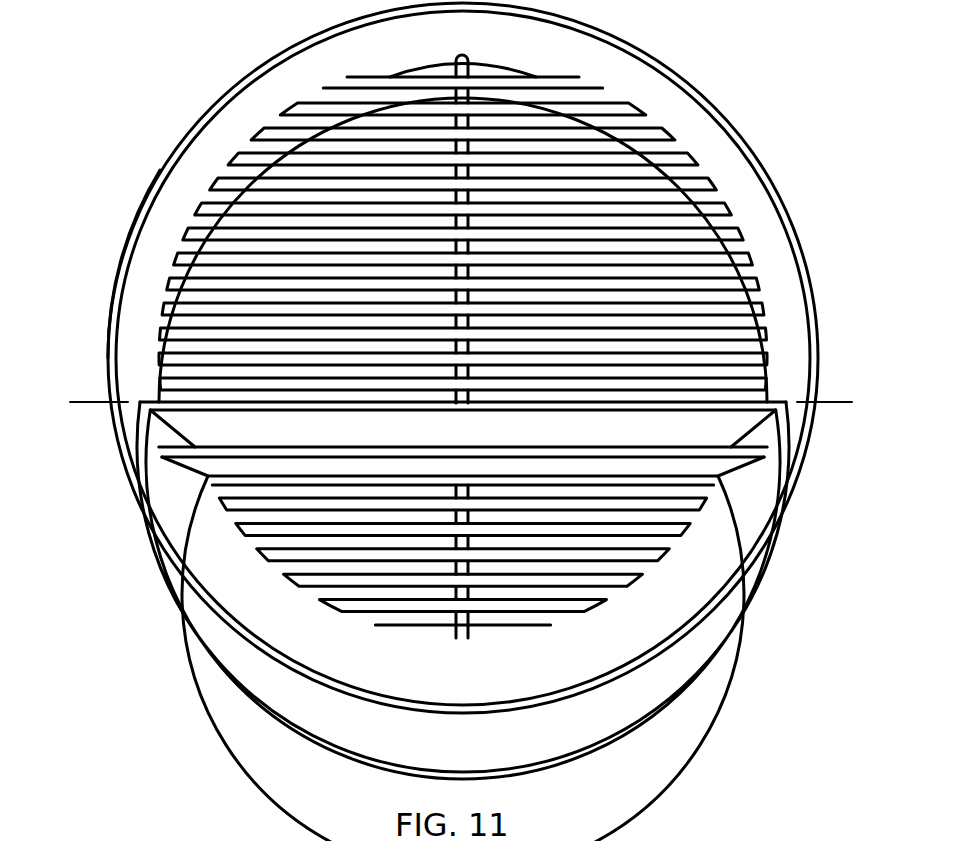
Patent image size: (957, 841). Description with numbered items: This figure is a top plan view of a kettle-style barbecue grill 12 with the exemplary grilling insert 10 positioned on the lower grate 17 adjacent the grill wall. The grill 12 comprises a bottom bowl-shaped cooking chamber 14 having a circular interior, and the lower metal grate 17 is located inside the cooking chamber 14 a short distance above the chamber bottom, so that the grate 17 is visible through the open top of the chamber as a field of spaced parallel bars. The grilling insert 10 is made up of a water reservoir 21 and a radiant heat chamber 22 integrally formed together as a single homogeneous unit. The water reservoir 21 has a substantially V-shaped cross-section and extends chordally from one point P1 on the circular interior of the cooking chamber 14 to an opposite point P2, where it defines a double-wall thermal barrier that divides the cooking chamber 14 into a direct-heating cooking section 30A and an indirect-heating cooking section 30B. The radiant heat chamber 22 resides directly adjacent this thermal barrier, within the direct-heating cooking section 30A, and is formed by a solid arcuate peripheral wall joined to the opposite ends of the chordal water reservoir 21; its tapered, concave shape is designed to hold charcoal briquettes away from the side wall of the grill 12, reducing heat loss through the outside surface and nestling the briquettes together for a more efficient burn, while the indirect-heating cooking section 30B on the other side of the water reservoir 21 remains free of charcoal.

The grilling insert 10 is at (703, 578).
The barbecue grill 12 is at (146, 149).
The cooking chamber 14 is at (146, 197).
The lower grate 17 is at (263, 131).
The water reservoir 21 is at (152, 438).
The radiant heat chamber 22 is at (292, 607).
The direct-heating cooking section 30A is at (198, 603).
The indirect-heating cooking section 30B is at (726, 172).
The point P1 is at (96, 402).
The point P2 is at (840, 402).